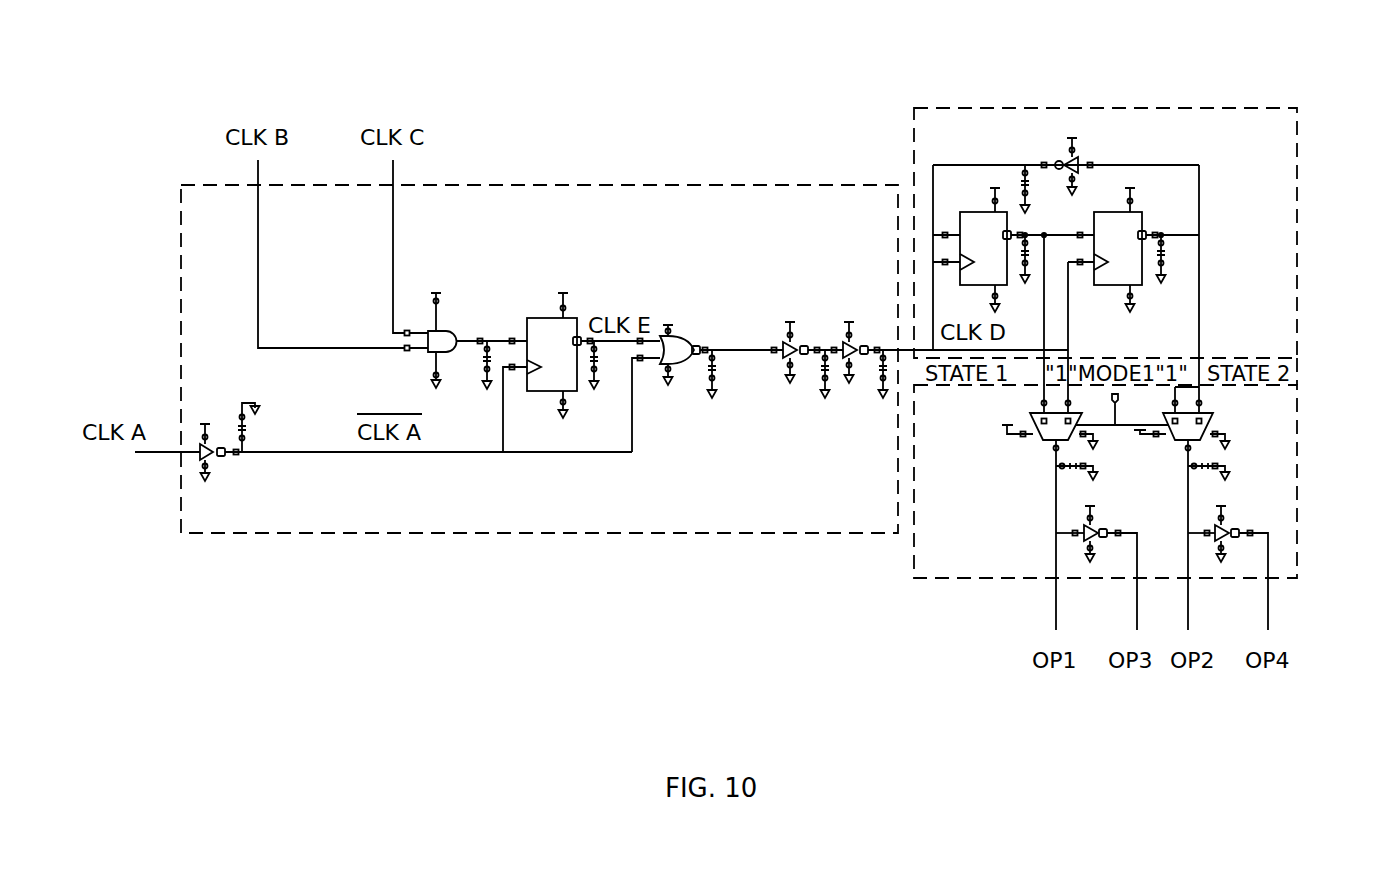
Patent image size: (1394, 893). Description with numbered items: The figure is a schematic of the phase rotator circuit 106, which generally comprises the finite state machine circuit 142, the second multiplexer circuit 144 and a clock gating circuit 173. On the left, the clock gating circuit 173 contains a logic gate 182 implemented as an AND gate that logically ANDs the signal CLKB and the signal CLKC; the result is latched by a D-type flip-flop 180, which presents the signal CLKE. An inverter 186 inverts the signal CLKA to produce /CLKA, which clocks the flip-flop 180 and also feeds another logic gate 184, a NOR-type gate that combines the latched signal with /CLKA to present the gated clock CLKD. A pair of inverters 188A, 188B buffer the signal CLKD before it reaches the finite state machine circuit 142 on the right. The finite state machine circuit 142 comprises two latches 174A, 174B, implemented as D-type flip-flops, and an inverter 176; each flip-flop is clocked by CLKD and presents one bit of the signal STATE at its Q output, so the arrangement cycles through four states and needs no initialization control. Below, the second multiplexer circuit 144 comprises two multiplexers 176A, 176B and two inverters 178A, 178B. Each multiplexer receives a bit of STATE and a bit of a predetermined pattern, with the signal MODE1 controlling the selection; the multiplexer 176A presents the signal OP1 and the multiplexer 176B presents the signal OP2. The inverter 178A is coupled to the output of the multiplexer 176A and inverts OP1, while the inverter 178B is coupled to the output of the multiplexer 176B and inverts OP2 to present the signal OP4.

The phase rotator circuit 106 is at (248, 84).
The finite state machine circuit 142 is at (1018, 107).
The second multiplexer circuit 144 is at (958, 580).
The clock gating circuit 173 is at (712, 185).
The latch 174A is at (962, 212).
The latch 174B is at (1143, 212).
The inverter 176 is at (1079, 160).
The multiplexer 176A is at (1036, 437).
The multiplexer 176B is at (1201, 440).
The inverter 178A is at (1091, 527).
The inverter 178B is at (1227, 527).
The D-type flip-flop 180 is at (545, 318).
The logic gate 182 is at (445, 331).
The logic gate 184 is at (684, 340).
The inverter 186 is at (214, 454).
The inverter 188A is at (783, 354).
The inverter 188B is at (845, 354).